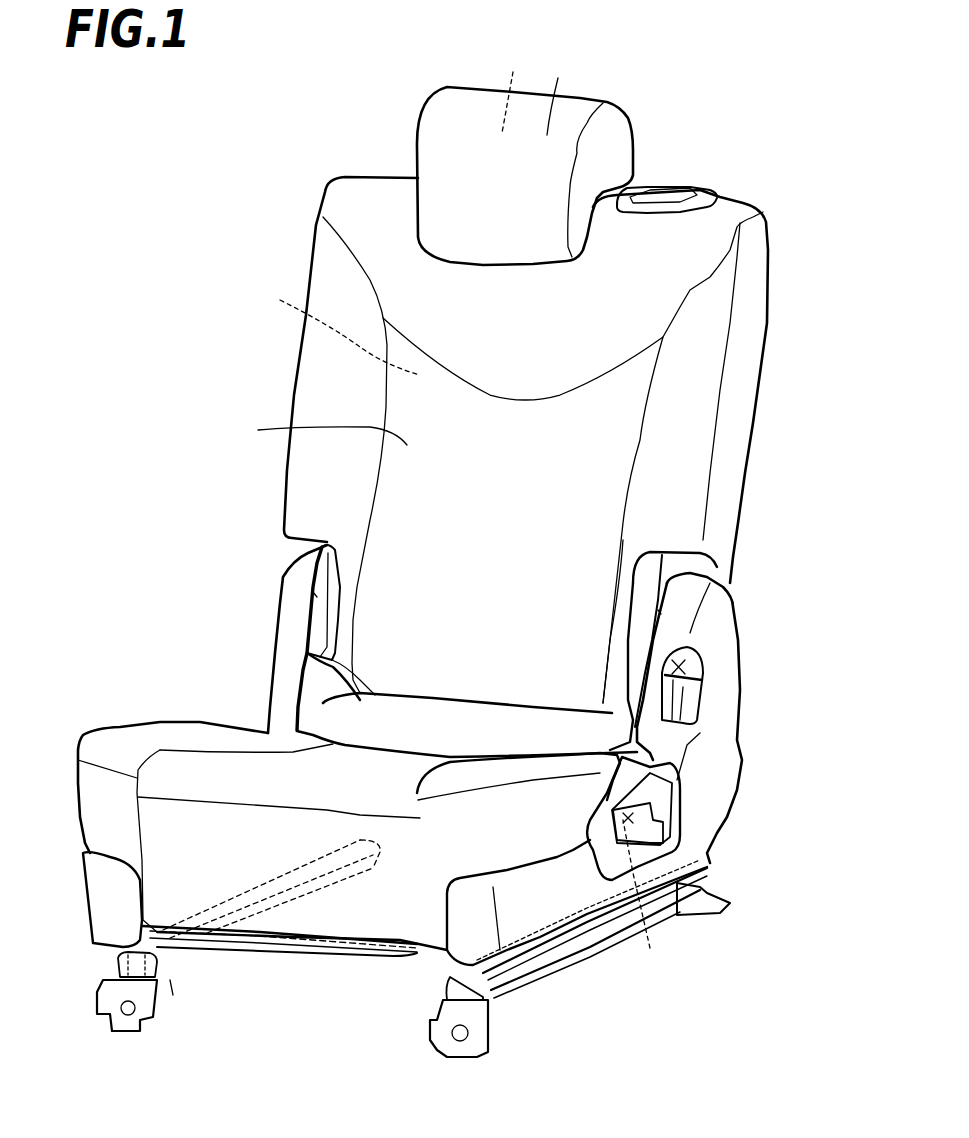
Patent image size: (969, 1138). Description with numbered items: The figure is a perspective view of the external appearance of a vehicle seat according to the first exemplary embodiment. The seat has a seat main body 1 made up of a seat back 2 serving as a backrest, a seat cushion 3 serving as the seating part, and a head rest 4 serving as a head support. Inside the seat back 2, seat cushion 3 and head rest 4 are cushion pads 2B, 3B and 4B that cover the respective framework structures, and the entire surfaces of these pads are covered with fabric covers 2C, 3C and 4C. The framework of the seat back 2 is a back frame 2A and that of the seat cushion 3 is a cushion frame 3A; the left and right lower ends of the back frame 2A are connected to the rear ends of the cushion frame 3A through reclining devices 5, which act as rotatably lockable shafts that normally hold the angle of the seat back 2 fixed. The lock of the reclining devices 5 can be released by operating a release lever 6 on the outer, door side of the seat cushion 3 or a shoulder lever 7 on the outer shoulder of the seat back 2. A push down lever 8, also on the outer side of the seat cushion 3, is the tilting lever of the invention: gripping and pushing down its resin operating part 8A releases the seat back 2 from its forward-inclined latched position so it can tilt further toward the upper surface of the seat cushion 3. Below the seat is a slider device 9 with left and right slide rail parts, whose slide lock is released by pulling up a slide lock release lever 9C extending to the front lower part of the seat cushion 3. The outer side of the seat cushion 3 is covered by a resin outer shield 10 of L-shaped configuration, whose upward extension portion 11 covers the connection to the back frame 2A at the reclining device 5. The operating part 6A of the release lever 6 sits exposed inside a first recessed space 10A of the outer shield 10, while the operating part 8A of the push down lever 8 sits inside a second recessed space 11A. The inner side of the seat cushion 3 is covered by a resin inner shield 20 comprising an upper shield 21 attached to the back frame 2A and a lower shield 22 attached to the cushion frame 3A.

The seat main body 1 is at (200, 215).
The seat back 2 is at (333, 367).
The back frame 2A is at (316, 332).
The cushion pad 2B is at (350, 337).
The fabric cover 2C is at (317, 431).
The seat cushion 3 is at (160, 730).
The cushion frame 3A is at (271, 803).
The cushion pad 3B is at (271, 889).
The fabric cover 3C is at (163, 763).
The head rest 4 is at (441, 122).
The cushion pad 4B is at (513, 89).
The fabric cover 4C is at (562, 94).
The reclining device 5 is at (315, 595).
The release lever 6 is at (653, 782).
The operating part 6A is at (653, 803).
The shoulder lever 7 is at (680, 190).
The push down lever 8 is at (703, 675).
The operating part 8A is at (697, 683).
The slider device 9 is at (183, 950).
The slide lock release lever 9C is at (278, 958).
The outer shield 10 is at (288, 643).
The first recessed space 10A is at (633, 864).
The upward extension portion 11 is at (290, 608).
The second recessed space 11A is at (677, 653).
The inner shield 20 is at (512, 645).
The upper shield 21 is at (327, 582).
The lower shield 22 is at (323, 663).